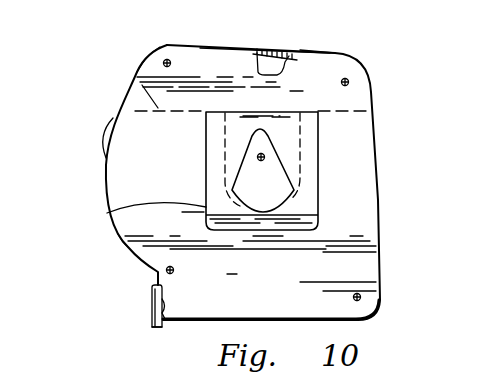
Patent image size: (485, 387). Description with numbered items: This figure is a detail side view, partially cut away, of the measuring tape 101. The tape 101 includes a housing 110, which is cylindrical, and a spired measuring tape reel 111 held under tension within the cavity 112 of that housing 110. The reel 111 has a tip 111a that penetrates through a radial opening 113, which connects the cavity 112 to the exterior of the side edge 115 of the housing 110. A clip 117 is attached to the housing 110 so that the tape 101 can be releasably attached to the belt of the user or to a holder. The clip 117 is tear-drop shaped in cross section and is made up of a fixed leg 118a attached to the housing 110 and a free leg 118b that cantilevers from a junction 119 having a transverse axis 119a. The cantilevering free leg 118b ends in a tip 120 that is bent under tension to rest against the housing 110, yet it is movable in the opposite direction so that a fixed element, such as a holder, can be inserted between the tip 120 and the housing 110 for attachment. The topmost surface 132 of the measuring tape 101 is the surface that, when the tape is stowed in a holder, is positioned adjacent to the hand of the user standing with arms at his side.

The measuring tape 101 is at (246, 184).
The housing 110 is at (377, 141).
The spired measuring tape reel 111 is at (151, 300).
The tip 111a is at (153, 328).
The cavity 112 is at (270, 65).
The radial opening 113 is at (165, 305).
The side edge 115 is at (127, 244).
The clip 117 is at (309, 106).
The fixed leg 118a is at (220, 161).
The free leg 118b is at (107, 213).
The junction 119 is at (238, 111).
The transverse axis 119a is at (128, 70).
The tip 120 is at (290, 231).
The topmost surface 132 is at (324, 58).